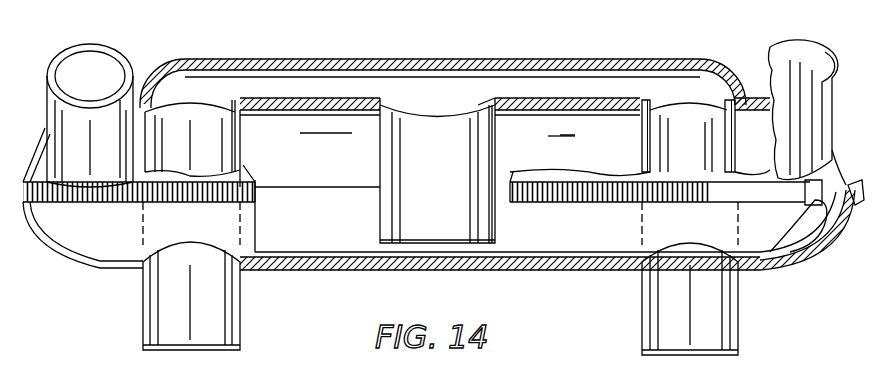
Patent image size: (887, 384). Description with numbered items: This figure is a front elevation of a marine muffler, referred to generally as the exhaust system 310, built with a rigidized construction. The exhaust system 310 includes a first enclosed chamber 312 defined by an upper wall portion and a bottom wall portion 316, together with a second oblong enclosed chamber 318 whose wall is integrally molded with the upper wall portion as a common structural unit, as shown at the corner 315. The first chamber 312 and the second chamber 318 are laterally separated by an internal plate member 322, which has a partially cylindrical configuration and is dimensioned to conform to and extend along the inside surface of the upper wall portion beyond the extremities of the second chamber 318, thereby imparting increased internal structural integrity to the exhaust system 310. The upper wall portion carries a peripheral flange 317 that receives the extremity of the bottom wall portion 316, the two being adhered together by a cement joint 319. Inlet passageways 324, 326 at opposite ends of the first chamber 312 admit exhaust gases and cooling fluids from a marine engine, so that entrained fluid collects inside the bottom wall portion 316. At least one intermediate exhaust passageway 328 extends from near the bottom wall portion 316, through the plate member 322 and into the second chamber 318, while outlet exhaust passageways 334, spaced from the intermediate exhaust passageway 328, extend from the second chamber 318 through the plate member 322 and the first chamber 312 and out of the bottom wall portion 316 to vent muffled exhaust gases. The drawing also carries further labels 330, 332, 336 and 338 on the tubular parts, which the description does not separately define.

The exhaust system 310 is at (598, 23).
The first enclosed chamber 312 is at (330, 242).
The corner 315 is at (90, 203).
The bottom wall portion 316 is at (772, 272).
The peripheral flange 317 is at (846, 145).
The second oblong enclosed chamber 318 is at (452, 101).
The cement joint 319 is at (838, 250).
The internal plate member 322 is at (302, 84).
The inlet passageway 324 is at (790, 60).
The inlet passageway 326 is at (118, 52).
The intermediate exhaust passageway 328 is at (497, 142).
The tube bottom 330 is at (494, 240).
The tube opening 332 is at (490, 106).
The outlet exhaust passageway 334 is at (240, 133).
The bottom port tube 336 is at (242, 318).
The side port tube 338 is at (213, 108).